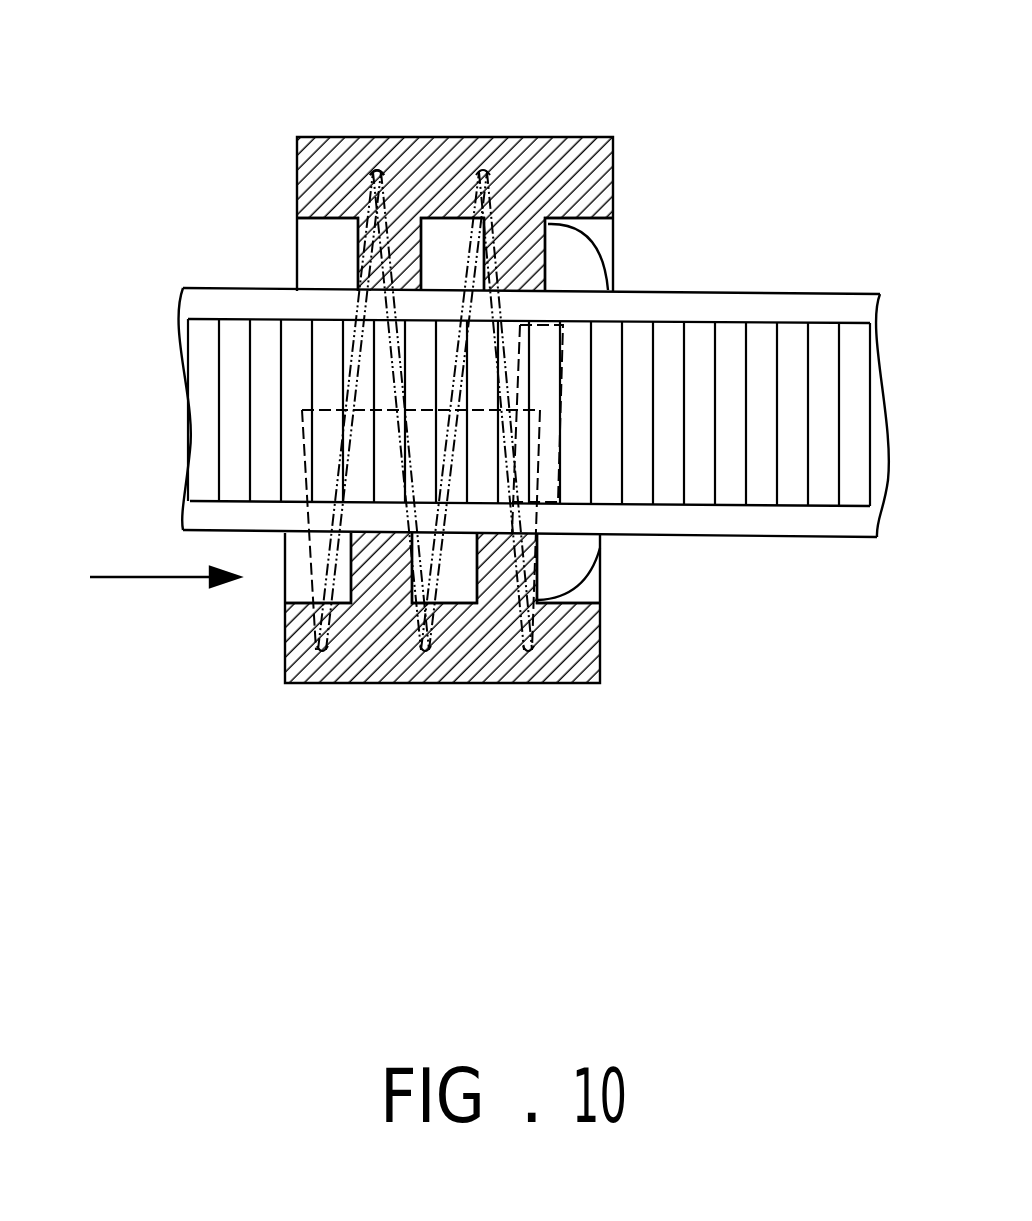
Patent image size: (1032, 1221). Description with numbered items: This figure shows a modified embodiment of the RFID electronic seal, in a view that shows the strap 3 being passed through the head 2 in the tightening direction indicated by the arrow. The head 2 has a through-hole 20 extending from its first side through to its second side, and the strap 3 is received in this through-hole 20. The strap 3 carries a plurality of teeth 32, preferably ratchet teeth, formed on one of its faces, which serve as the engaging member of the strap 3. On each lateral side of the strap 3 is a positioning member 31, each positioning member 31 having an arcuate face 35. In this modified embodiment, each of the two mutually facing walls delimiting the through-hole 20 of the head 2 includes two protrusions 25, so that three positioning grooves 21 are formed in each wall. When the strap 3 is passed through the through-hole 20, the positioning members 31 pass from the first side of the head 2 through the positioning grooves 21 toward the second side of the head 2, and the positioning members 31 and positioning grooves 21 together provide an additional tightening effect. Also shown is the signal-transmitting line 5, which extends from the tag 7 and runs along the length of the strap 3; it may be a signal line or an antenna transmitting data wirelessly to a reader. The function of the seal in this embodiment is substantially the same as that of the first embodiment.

The head 2 is at (328, 138).
The strap 3 is at (778, 292).
The signal-transmitting line 5 is at (515, 662).
The tag 7 is at (505, 333).
The through-hole 20 is at (394, 187).
The positioning grooves 21 is at (305, 250).
The protrusions 25 is at (380, 578).
The positioning members 31 is at (569, 252).
The teeth 32 is at (698, 355).
The arcuate face 35 is at (598, 248).